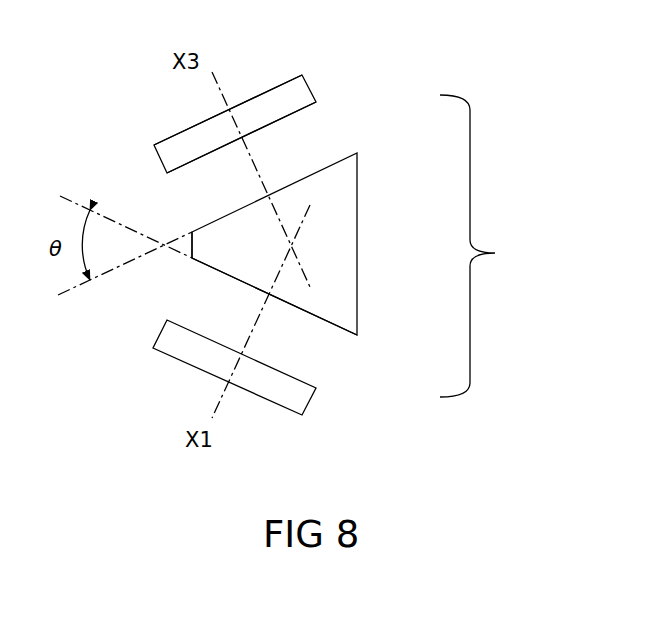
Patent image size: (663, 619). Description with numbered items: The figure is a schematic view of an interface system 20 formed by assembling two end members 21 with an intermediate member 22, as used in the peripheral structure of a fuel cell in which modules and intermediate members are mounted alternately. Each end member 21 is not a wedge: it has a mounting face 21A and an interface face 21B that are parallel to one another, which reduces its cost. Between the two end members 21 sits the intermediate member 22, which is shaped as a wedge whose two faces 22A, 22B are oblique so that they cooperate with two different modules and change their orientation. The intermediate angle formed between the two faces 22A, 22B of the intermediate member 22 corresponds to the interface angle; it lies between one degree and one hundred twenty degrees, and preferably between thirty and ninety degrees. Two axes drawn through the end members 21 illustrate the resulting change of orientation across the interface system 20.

The interface system 20 is at (491, 246).
The end member 21 is at (303, 93).
The mounting face 21A is at (266, 91).
The interface face 21B is at (291, 115).
The intermediate member 22 is at (353, 252).
The first face of intermediate member 22A is at (199, 226).
The second face of intermediate member 22B is at (328, 329).